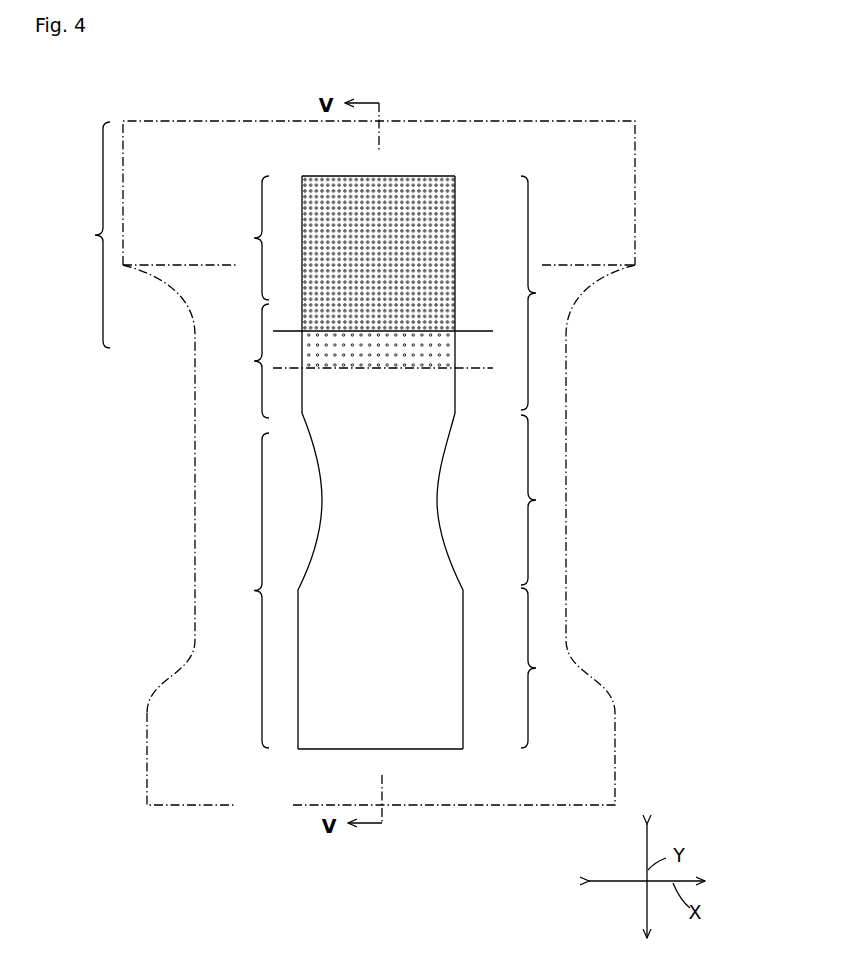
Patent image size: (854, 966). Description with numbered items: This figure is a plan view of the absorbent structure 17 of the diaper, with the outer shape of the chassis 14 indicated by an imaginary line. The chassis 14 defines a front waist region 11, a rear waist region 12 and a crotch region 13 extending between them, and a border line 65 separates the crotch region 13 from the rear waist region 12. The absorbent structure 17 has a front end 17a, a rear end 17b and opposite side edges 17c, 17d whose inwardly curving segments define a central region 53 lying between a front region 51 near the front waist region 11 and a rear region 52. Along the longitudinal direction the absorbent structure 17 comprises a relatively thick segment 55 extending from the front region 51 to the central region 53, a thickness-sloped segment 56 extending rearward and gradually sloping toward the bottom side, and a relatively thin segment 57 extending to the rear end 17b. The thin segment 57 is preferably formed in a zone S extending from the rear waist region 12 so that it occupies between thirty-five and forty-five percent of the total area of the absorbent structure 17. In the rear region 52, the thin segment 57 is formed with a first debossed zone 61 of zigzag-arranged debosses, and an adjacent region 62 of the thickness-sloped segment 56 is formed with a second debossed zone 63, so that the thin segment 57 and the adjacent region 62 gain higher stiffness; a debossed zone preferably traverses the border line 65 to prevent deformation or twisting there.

The chassis 14 is at (408, 437).
The rear waist region 12 is at (636, 205).
The crotch region 13 is at (567, 467).
The front waist region 11 is at (616, 750).
The border line 65 is at (148, 264).
The zone S is at (95, 236).
The absorbent structure 17 is at (394, 463).
The front end 17a is at (405, 750).
The rear end 17b is at (437, 176).
The side edge 17c is at (321, 500).
The side edge 17d is at (438, 500).
The first debossed zone 61 is at (333, 185).
The adjacent region 62 is at (401, 361).
The second debossed zone 63 is at (490, 332).
The relatively thin segment 57 is at (248, 238).
The thickness-sloped segment 56 is at (248, 361).
The relatively thick segment 55 is at (248, 590).
The rear region 52 is at (541, 293).
The central region 53 is at (541, 500).
The front region 51 is at (541, 668).